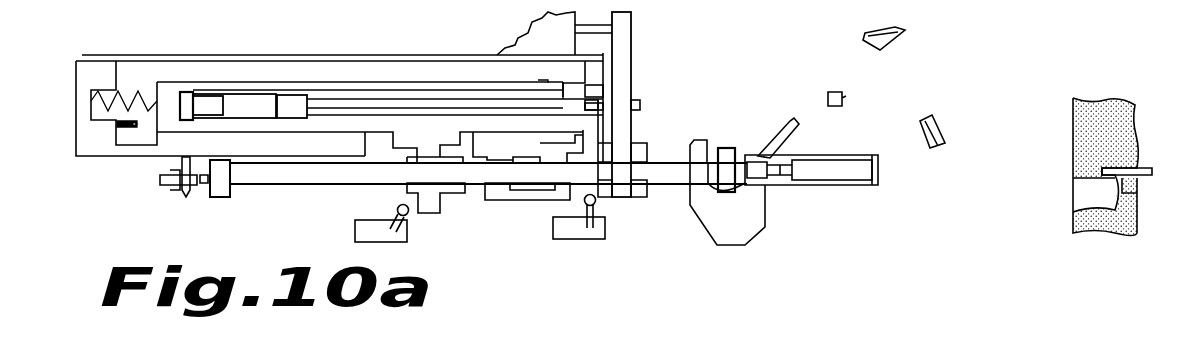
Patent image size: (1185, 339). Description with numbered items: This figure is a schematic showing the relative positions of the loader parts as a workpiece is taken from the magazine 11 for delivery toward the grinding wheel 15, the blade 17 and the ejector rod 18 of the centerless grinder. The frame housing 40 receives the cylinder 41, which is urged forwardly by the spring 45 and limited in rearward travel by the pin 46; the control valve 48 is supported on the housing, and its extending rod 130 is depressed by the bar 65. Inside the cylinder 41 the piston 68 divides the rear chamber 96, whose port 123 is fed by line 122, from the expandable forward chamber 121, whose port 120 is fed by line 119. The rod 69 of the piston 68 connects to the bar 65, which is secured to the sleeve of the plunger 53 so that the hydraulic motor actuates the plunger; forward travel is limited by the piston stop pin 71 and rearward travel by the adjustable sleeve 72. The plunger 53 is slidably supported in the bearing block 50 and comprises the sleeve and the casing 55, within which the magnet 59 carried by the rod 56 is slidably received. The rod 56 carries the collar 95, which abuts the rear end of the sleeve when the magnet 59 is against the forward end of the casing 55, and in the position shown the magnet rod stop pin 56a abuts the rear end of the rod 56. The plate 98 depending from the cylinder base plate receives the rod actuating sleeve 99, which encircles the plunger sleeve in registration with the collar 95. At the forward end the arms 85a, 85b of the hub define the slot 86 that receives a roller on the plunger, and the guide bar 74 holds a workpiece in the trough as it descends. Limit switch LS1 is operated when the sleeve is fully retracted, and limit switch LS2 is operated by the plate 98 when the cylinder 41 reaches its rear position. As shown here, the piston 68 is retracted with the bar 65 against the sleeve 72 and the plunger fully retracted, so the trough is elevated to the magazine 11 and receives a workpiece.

The frame housing 40 is at (151, 57).
The cylinder 41 is at (286, 86).
The spring 45 is at (92, 92).
The pin 46 is at (128, 130).
The control valve 48 is at (520, 30).
The bearing block 50 is at (491, 200).
The plunger 53 is at (322, 188).
The casing 55 is at (852, 186).
The rod 56 is at (782, 180).
The magnet rod stop pin 56a is at (194, 192).
The magnet 59 is at (832, 170).
The bar 65 is at (632, 50).
The piston 68 is at (234, 106).
The rod 69 is at (433, 99).
The piston stop pin 71 is at (835, 90).
The adjustable sleeve 72 is at (635, 112).
The guide bar 74 is at (940, 120).
The arm 85a is at (700, 139).
The arm 85b is at (784, 122).
The slot 86 is at (724, 148).
The collar 95 is at (220, 198).
The rear chamber 96 is at (182, 95).
The plate 98 is at (432, 214).
The rod actuating sleeve 99 is at (450, 196).
The line 119 is at (538, 80).
The port 120 is at (549, 84).
The forward chamber 121 is at (370, 90).
The line 122 is at (196, 94).
The port 123 is at (237, 86).
The rod 130 is at (580, 34).
The magazine 11 is at (896, 35).
The grinding wheel 15 is at (1108, 100).
The blade 17 is at (1140, 192).
The ejector rod 18 is at (1148, 168).
The limit switch LS1 is at (556, 242).
The limit switch LS2 is at (357, 244).